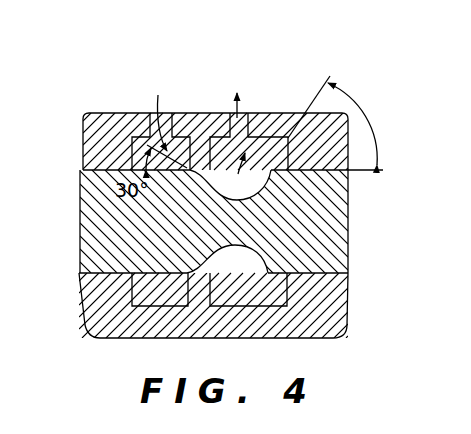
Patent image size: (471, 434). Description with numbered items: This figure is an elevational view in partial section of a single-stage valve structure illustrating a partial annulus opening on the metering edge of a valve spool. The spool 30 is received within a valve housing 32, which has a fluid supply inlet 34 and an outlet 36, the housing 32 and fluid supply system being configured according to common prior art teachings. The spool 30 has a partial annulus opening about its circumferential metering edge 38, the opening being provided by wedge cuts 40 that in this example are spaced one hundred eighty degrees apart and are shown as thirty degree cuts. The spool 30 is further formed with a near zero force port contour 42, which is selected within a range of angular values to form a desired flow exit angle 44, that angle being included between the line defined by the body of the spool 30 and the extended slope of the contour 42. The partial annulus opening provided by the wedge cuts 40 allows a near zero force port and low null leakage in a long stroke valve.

The spool 30 is at (82, 222).
The valve housing 32 is at (83, 135).
The fluid supply inlet 34 is at (148, 123).
The outlet 36 is at (244, 113).
The circumferential metering edge 38 is at (185, 277).
The wedge cuts 40 is at (201, 178).
The near zero force port contour 42 is at (264, 264).
The flow exit angle 44 is at (378, 72).